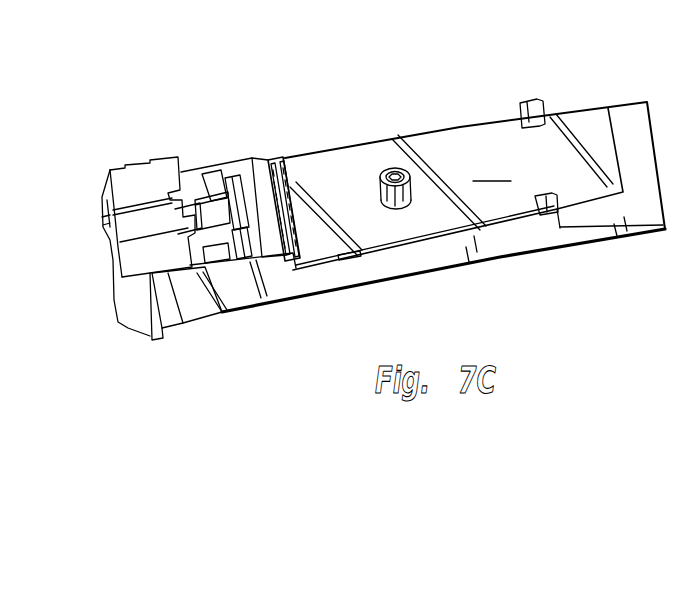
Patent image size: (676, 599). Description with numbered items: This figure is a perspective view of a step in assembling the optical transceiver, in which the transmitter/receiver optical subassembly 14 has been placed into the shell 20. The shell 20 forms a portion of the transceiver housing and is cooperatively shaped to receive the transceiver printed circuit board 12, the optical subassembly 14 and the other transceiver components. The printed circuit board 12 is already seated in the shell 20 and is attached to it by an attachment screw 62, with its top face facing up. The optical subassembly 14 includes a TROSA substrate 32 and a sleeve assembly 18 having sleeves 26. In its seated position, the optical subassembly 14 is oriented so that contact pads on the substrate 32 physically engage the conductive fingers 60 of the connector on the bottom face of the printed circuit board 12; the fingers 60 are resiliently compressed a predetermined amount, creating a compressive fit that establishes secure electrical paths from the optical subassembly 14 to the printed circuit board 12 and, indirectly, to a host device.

The transceiver printed circuit board 12 is at (465, 128).
The transmitter/receiver optical subassembly 14 is at (245, 108).
The sleeve assembly 18 is at (262, 150).
The shell 20 is at (407, 258).
The sleeves 26 is at (208, 212).
The TROSA substrate 32 is at (283, 156).
The conductive fingers 60 is at (286, 156).
The attachment screw 62 is at (403, 168).